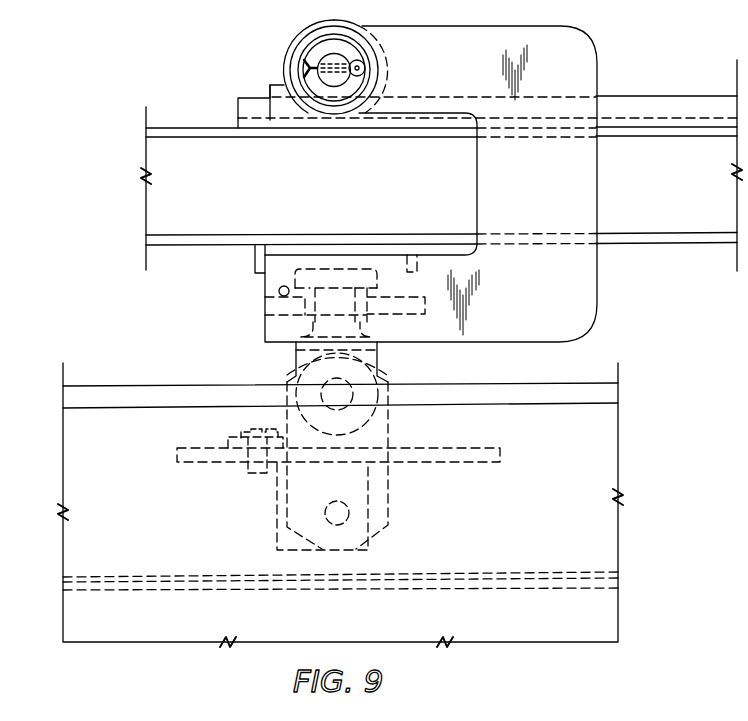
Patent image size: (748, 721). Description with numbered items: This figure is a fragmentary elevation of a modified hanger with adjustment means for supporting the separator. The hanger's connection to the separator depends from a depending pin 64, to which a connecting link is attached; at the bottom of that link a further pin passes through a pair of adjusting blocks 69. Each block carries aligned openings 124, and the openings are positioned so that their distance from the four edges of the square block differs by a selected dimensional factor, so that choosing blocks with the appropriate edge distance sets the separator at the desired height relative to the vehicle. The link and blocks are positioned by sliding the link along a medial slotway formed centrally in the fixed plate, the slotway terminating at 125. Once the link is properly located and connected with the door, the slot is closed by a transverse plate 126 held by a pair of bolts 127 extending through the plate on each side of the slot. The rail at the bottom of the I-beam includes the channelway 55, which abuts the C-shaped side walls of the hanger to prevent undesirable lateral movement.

The channelway 55 is at (258, 262).
The depending pin 64 is at (295, 358).
The adjusting blocks 69 is at (278, 542).
The aligned openings 124 is at (349, 513).
The termination of slotway 125 is at (398, 450).
The transverse plate 126 is at (228, 442).
The bolts 127 is at (250, 428).